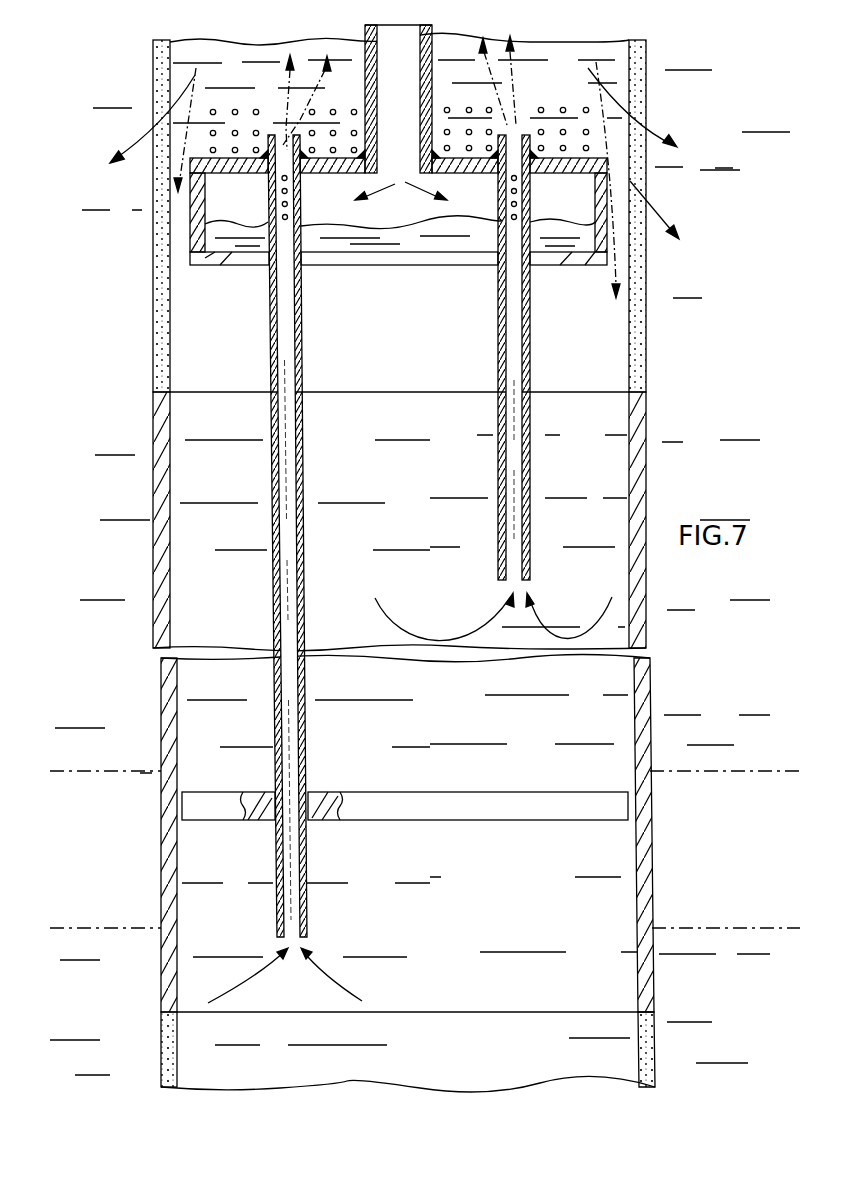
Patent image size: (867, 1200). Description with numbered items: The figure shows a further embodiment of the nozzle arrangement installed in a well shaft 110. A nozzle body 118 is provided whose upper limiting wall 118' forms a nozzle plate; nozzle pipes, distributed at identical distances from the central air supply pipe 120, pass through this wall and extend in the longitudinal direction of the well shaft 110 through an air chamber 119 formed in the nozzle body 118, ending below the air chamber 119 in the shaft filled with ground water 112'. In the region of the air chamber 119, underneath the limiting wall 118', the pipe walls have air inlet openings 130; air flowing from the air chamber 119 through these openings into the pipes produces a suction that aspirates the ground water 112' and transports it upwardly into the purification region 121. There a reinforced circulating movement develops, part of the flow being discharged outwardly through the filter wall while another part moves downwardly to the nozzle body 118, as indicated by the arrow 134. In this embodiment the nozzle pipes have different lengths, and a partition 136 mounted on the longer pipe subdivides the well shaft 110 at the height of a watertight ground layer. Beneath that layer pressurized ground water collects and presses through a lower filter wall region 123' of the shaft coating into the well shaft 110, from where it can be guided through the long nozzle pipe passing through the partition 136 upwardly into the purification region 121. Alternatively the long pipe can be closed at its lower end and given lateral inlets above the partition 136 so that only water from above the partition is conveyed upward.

The well shaft 110 is at (161, 703).
The ground water 112' is at (446, 429).
The nozzle body 118 is at (355, 219).
The upper limiting wall 118' is at (398, 121).
The air chamber 119 is at (383, 218).
The central air supply pipe 120 is at (435, 48).
The purification region 121 is at (178, 75).
The lower filter wall region 123' is at (408, 1049).
The air inlet openings 130 is at (299, 183).
The arrow 134 is at (176, 177).
The partition 136 is at (460, 810).